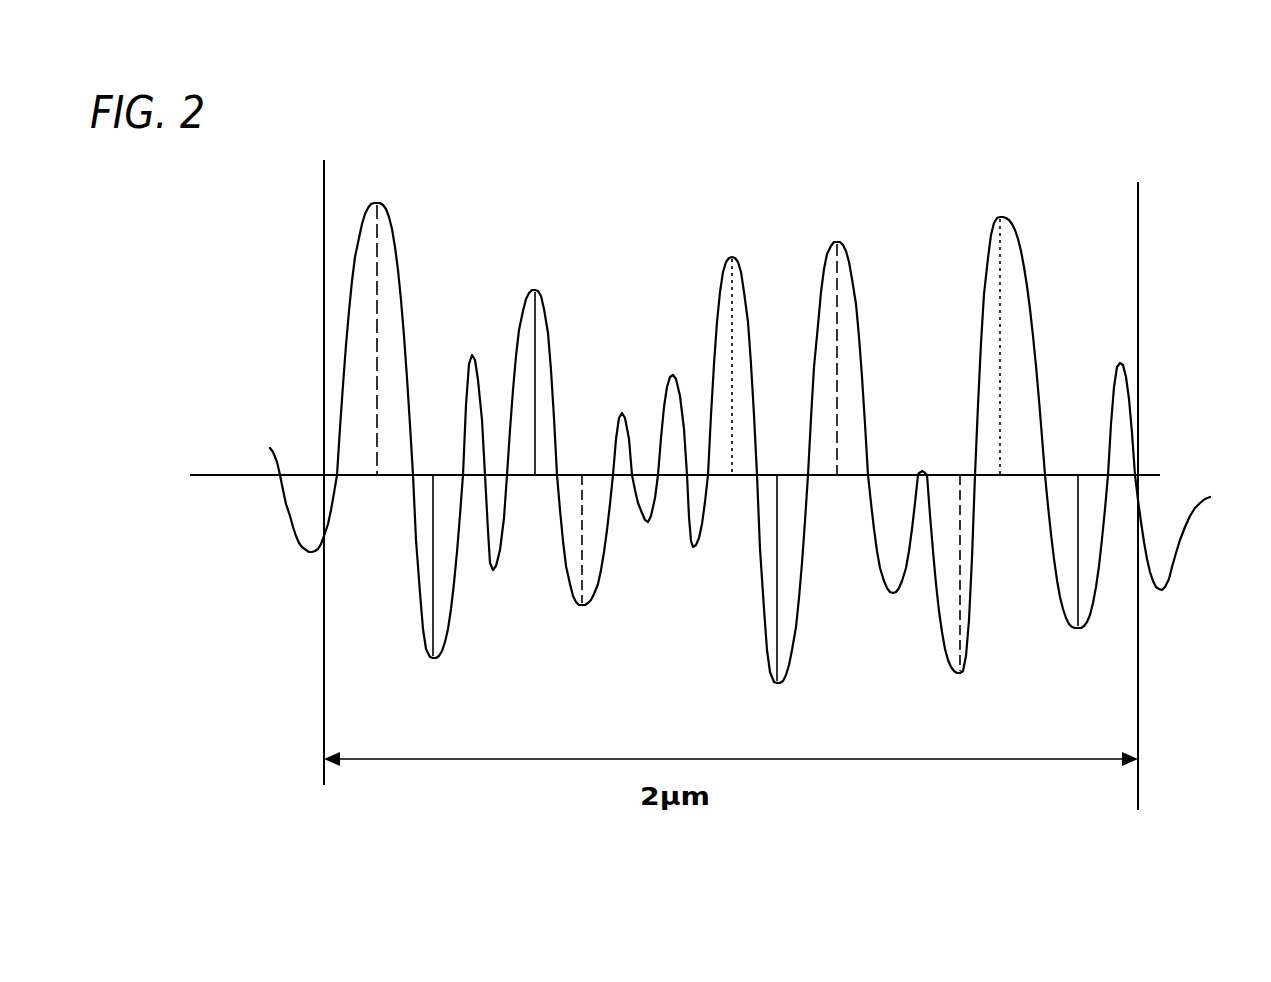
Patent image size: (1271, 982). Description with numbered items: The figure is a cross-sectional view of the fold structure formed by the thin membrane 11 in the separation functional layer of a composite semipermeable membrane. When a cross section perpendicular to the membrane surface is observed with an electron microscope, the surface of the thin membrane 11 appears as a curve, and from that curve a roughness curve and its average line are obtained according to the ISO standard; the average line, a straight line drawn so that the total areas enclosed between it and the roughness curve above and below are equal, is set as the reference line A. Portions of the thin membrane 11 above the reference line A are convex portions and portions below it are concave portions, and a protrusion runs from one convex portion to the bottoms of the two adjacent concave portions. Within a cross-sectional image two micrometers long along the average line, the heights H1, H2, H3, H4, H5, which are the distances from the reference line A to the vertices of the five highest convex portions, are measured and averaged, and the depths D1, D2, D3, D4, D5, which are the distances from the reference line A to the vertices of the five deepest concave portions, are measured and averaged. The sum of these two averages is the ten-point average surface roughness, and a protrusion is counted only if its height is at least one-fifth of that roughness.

The thin membrane 11 is at (1077, 173).
The reference line A is at (701, 462).
The height of highest convex portion H1 is at (378, 316).
The height of second highest convex portion H2 is at (1001, 323).
The height of third highest convex portion H3 is at (838, 336).
The height of fourth highest convex portion H4 is at (739, 346).
The height of fifth highest convex portion H5 is at (541, 358).
The depth of deepest concave portion D1 is at (779, 599).
The depth of second deepest concave portion D2 is at (959, 597).
The depth of third deepest concave portion D3 is at (429, 589).
The depth of fourth deepest concave portion D4 is at (1077, 575).
The depth of fifth deepest concave portion D5 is at (564, 560).